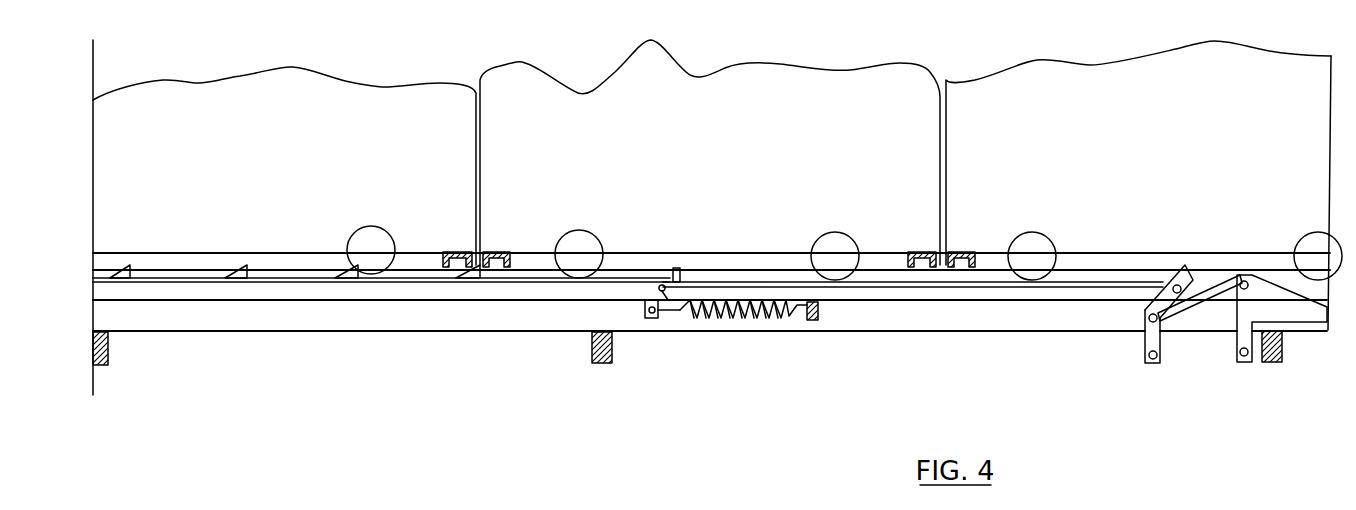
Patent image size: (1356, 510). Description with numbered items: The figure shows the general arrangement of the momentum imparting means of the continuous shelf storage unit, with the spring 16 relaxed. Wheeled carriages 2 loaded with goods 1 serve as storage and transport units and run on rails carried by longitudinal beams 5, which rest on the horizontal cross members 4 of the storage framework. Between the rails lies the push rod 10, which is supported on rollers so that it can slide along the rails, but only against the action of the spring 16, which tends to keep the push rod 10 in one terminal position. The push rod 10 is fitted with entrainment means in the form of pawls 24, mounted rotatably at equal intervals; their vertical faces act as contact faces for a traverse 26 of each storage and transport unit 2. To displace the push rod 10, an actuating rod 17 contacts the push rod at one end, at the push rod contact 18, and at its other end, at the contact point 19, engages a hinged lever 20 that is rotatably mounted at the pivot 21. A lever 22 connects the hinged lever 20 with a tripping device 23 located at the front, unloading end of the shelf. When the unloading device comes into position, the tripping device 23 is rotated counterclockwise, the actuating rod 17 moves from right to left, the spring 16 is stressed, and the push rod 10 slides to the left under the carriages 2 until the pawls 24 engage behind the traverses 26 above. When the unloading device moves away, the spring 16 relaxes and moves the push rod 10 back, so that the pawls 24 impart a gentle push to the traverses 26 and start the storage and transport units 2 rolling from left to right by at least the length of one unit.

The goods 1 is at (264, 149).
The wheeled carriage 2 is at (297, 262).
The horizontal cross member 4 is at (602, 364).
The longitudinal beam 5 is at (420, 308).
The push rod 10 is at (202, 290).
The spring 16 is at (730, 316).
The actuating rod 17 is at (877, 288).
The push rod contact end 18 is at (668, 300).
The hinged lever contact point 19 is at (1178, 276).
The hinged lever 20 is at (1147, 342).
The pivot mounting 21 is at (1153, 362).
The lever 22 is at (1197, 303).
The tripping device 23 is at (1310, 304).
The pawl 24 is at (126, 270).
The traverse 26 is at (495, 253).